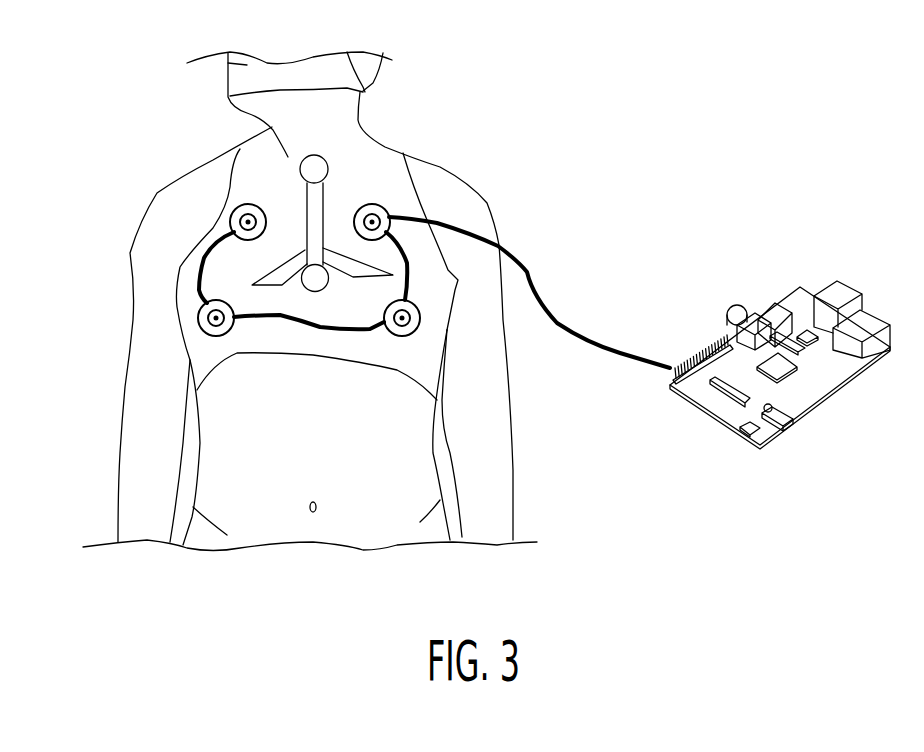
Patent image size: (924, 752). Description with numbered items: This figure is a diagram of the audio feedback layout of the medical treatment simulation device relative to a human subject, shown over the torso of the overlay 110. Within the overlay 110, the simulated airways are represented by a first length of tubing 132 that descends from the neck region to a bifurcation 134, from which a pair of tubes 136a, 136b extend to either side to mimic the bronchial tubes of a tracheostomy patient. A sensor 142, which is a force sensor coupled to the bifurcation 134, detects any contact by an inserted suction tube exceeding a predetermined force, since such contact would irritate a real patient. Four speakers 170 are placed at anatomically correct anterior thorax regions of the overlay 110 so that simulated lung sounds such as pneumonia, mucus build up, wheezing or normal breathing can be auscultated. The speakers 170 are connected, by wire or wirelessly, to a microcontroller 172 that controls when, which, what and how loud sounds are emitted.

The overlay 110 is at (248, 356).
The first length of tubing 132 is at (305, 198).
The bifurcation 134 is at (311, 290).
The tube 136a is at (266, 285).
The tube 136b is at (392, 270).
The sensor 142 is at (327, 287).
The speakers 170 is at (230, 222).
The microcontroller 172 is at (843, 287).